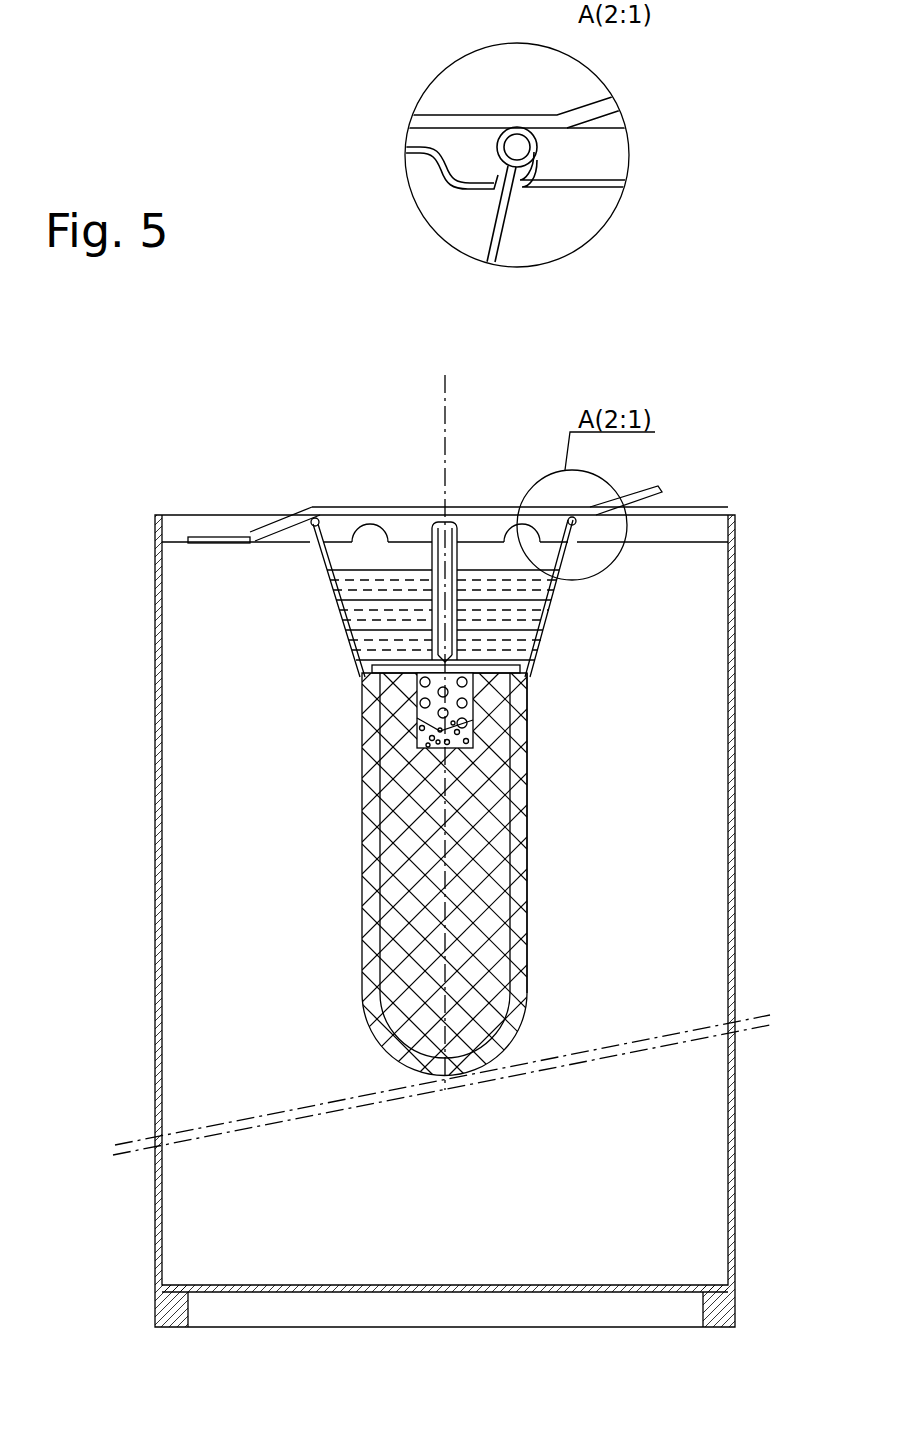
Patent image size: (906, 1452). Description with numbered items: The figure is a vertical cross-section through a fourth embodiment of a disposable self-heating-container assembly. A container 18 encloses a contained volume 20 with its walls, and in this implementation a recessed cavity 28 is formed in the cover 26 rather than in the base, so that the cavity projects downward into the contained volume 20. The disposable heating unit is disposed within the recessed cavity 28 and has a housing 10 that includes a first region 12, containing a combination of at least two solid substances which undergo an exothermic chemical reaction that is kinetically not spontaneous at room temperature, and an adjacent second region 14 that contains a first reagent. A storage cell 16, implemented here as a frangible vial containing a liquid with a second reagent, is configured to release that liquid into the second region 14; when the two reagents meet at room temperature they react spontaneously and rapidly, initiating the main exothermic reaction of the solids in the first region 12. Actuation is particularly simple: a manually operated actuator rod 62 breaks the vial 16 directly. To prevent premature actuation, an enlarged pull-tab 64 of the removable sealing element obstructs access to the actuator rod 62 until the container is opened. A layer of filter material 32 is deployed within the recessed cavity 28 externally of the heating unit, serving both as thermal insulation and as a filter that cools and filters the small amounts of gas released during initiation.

The housing 10 is at (584, 874).
The first region 12 is at (470, 888).
The second region 14 is at (458, 735).
The storage cell 16 is at (487, 670).
The container 18 is at (158, 653).
The contained volume 20 is at (207, 772).
The cover 26 is at (220, 538).
The recessed cavity 28 is at (527, 940).
The layer of filter material 32 is at (377, 612).
The actuator rod 62 is at (453, 540).
The pull-tab 64 is at (360, 513).